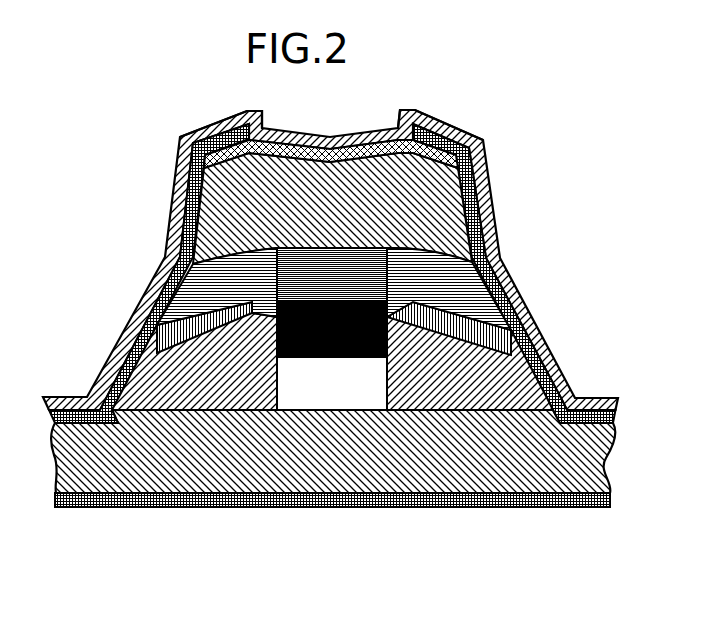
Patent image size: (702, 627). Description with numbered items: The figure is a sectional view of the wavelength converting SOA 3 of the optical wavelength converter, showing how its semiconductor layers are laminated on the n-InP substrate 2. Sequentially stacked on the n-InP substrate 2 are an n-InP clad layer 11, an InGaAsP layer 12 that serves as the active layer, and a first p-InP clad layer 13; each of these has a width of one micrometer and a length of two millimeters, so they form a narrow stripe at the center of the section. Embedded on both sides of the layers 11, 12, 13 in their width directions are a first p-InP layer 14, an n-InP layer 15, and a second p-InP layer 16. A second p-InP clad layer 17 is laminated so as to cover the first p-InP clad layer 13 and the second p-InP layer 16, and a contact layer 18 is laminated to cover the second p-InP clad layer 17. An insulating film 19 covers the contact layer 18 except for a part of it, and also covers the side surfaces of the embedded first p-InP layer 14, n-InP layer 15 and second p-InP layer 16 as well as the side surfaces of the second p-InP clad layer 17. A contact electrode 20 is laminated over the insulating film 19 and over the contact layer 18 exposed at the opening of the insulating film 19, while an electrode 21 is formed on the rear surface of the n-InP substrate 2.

The n-InP substrate 2 is at (577, 458).
The wavelength converting SOA 3 is at (357, 294).
The n-InP clad layer 11 is at (310, 403).
The InGaAsP layer 12 is at (343, 357).
The first p-InP clad layer 13 is at (293, 290).
The first p-InP layer 14 is at (560, 368).
The n-InP layer 15 is at (527, 318).
The second p-InP layer 16 is at (470, 296).
The second p-InP clad layer 17 is at (441, 212).
The contact layer 18 is at (470, 133).
The insulating film 19 is at (188, 184).
The contact electrode 20 is at (198, 128).
The electrode 21 is at (531, 508).